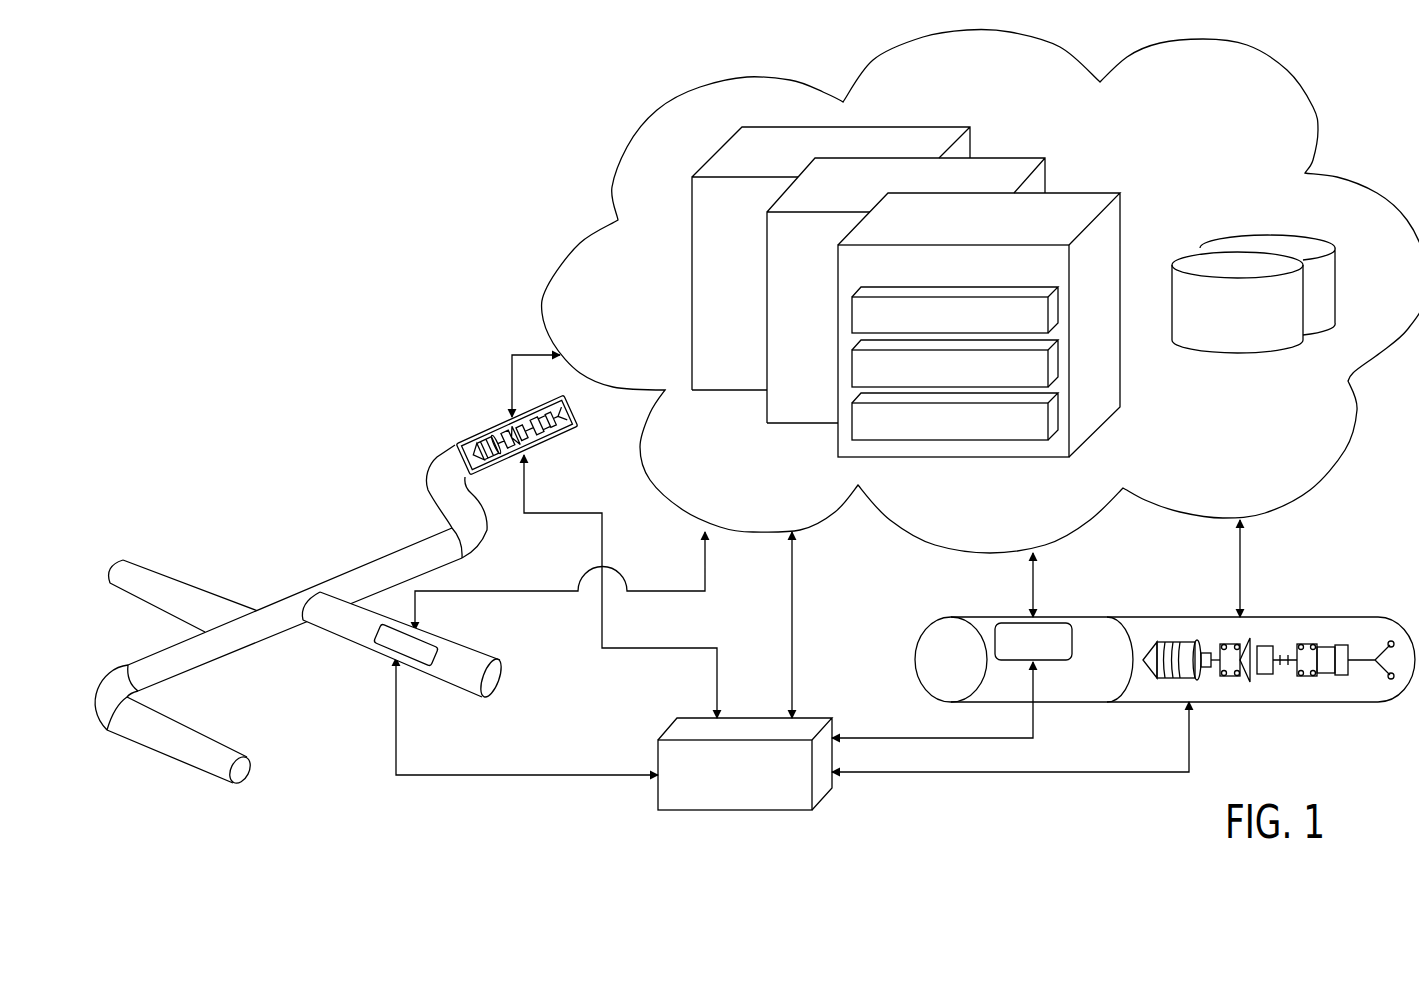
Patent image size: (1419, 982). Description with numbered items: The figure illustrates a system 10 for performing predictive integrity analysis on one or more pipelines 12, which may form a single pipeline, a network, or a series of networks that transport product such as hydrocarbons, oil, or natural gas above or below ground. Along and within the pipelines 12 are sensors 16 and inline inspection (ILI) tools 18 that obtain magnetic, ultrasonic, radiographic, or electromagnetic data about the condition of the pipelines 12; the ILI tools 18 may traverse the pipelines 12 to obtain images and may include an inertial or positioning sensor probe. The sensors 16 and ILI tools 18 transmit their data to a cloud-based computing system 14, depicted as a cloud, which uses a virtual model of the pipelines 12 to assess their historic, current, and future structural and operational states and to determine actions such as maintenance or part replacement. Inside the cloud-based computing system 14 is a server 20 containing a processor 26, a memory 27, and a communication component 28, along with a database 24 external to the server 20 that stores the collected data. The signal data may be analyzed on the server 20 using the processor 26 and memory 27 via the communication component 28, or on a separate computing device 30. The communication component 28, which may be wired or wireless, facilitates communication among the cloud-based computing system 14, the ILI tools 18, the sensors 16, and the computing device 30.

The system 10 is at (362, 165).
The pipelines 12 is at (338, 727).
The cloud-based computing system 14 is at (686, 92).
The sensors 16 is at (376, 634).
The inline inspection (ILI) tools 18 is at (483, 422).
The server 20 is at (934, 275).
The database 24 is at (1307, 363).
The processor 26 is at (1048, 315).
The memory 27 is at (1050, 366).
The communication component 28 is at (1050, 418).
The computing device 30 is at (733, 810).